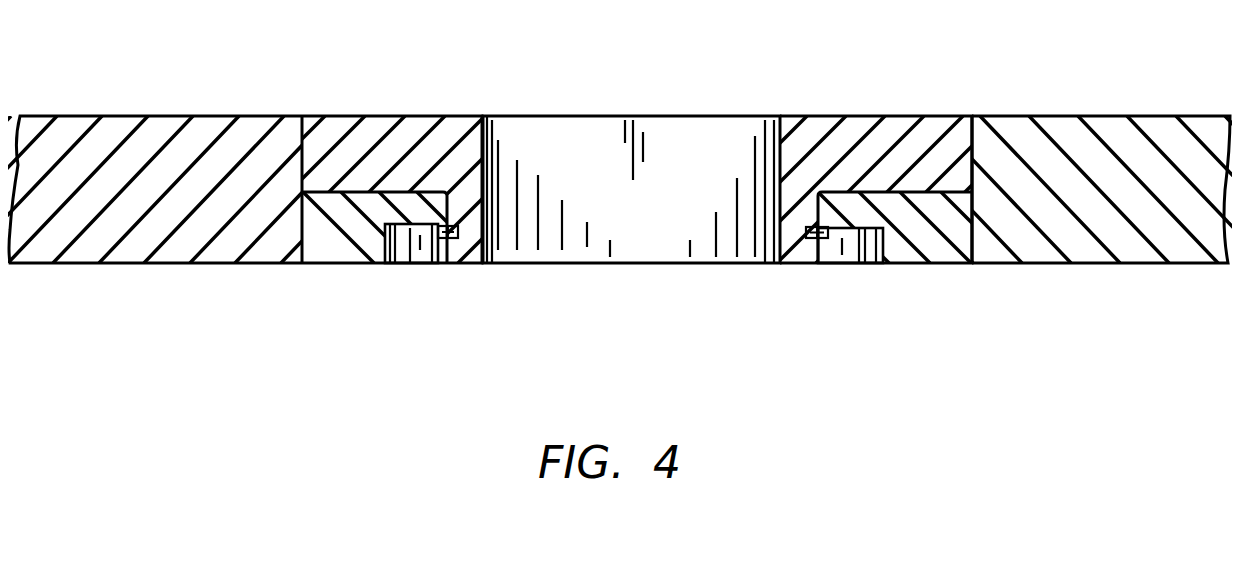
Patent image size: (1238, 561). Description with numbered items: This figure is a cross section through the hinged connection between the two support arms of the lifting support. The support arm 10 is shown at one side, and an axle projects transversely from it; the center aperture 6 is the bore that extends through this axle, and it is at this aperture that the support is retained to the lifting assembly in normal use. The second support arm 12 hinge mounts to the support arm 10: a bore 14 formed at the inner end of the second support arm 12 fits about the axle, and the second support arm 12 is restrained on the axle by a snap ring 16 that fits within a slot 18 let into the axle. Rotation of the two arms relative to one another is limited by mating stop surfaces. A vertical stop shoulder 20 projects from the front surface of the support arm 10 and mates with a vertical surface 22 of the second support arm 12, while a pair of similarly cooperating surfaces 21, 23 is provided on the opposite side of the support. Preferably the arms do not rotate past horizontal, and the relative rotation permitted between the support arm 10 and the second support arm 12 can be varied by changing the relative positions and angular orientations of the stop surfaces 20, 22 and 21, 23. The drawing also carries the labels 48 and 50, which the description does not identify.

The window 6 is at (482, 141).
The first wall 10 is at (119, 119).
The second wall 12 is at (1155, 119).
The seal 14 is at (444, 226).
The sensor 16 is at (440, 238).
The sensor 18 is at (806, 232).
The frame 20 is at (300, 216).
The frame member 21 is at (972, 122).
The spacer 22 is at (305, 240).
The joint 23 is at (974, 149).
The insert 48 is at (325, 192).
The sensor 50 is at (866, 243).